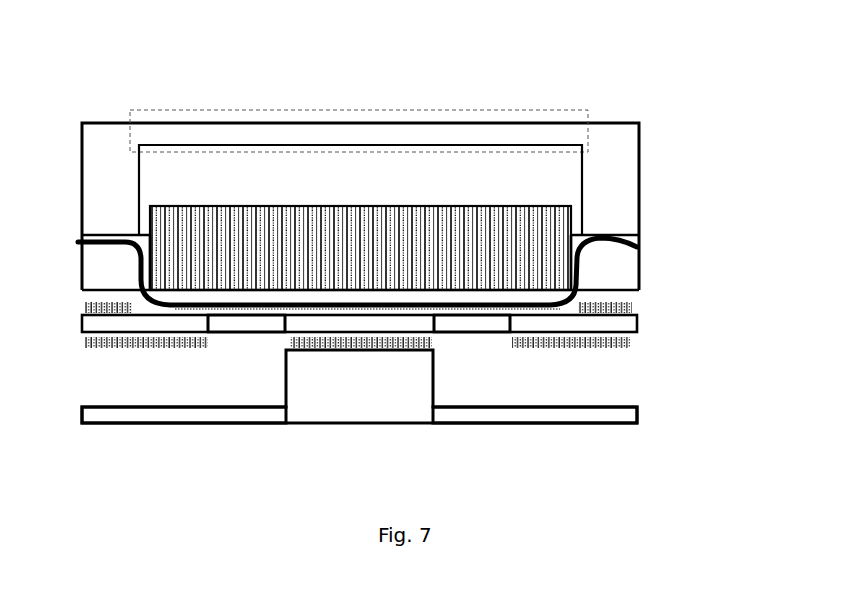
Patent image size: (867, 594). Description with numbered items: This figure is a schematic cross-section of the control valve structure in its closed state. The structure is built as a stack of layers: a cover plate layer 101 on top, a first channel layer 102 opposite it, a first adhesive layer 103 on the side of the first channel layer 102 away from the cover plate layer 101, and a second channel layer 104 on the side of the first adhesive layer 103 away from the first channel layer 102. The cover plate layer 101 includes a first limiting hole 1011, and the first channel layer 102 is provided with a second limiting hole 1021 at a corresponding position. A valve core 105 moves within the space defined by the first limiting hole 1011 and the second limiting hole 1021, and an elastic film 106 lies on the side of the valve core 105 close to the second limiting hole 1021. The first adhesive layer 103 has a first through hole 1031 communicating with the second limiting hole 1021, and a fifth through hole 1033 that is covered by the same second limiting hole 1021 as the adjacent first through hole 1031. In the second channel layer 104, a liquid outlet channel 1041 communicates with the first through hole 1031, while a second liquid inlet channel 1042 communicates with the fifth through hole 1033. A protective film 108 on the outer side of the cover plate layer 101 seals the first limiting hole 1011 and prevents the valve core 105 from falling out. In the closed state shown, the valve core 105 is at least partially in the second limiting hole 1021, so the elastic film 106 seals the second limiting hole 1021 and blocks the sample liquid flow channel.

The cover plate layer 101 is at (639, 171).
The protective film 108 is at (352, 110).
The first limiting hole 1011 is at (428, 190).
The valve core 105 is at (497, 233).
The first channel layer 102 is at (633, 279).
The elastic film 106 is at (637, 247).
The second limiting hole 1021 is at (560, 308).
The first adhesive layer 103 is at (637, 321).
The first through hole 1031 is at (249, 322).
The fifth through hole 1033 is at (452, 322).
The second channel layer 104 is at (637, 415).
The liquid outlet channel 1041 is at (156, 395).
The second liquid inlet channel 1042 is at (523, 395).